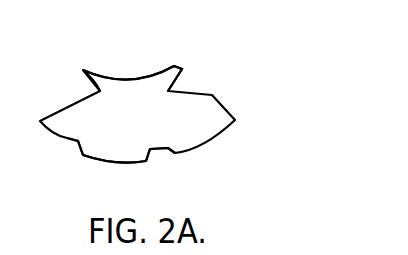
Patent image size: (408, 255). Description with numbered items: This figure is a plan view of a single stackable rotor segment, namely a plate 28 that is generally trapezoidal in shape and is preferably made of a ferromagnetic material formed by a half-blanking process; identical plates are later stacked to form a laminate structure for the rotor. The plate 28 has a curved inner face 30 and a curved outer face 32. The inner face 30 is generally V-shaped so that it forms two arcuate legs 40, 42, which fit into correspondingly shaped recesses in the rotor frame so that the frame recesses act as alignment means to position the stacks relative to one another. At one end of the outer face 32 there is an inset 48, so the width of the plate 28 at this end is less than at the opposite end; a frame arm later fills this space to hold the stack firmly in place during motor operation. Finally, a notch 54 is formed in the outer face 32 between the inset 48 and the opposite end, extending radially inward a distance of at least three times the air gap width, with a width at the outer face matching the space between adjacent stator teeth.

The plate 28 is at (233, 106).
The arcuate leg 40 is at (100, 70).
The curved inner face 30 is at (146, 74).
The arcuate leg 42 is at (182, 70).
The inset 48 is at (62, 142).
The curved outer face 32 is at (133, 165).
The notch 54 is at (163, 153).